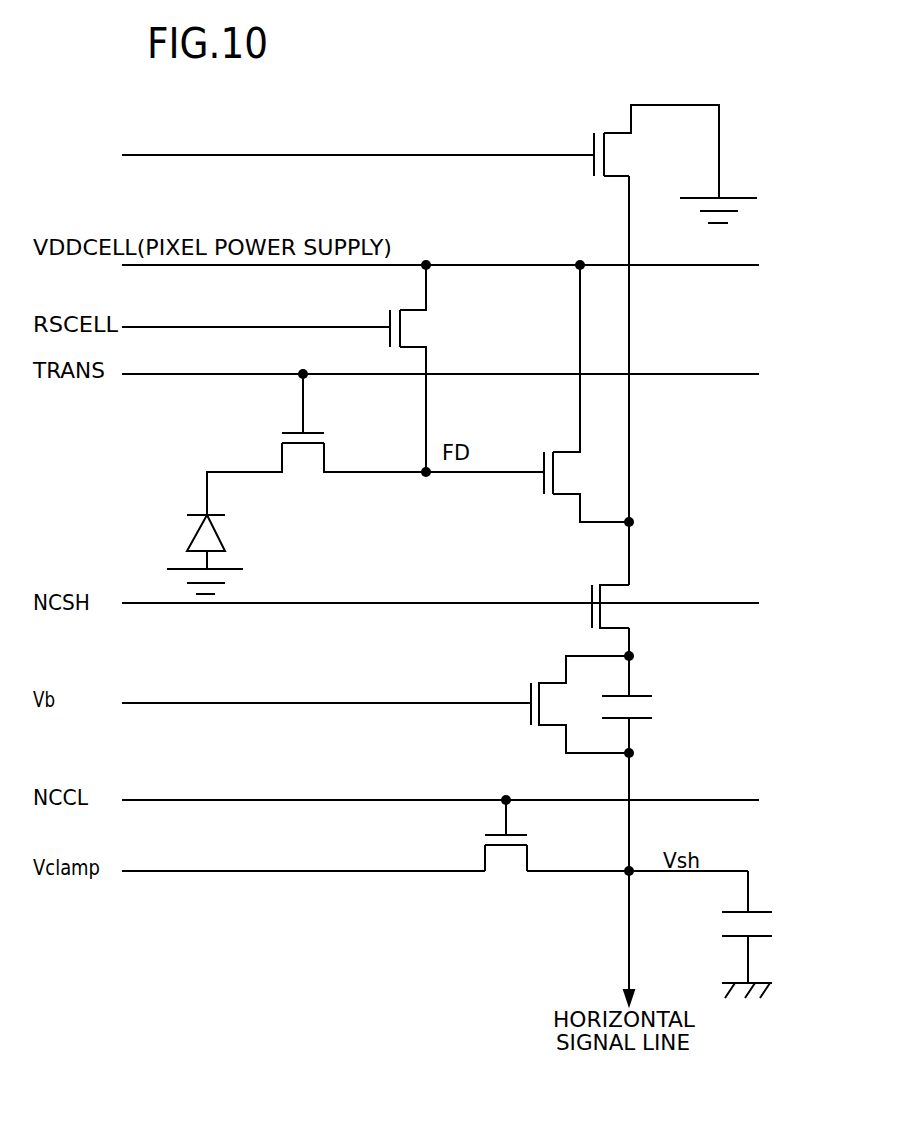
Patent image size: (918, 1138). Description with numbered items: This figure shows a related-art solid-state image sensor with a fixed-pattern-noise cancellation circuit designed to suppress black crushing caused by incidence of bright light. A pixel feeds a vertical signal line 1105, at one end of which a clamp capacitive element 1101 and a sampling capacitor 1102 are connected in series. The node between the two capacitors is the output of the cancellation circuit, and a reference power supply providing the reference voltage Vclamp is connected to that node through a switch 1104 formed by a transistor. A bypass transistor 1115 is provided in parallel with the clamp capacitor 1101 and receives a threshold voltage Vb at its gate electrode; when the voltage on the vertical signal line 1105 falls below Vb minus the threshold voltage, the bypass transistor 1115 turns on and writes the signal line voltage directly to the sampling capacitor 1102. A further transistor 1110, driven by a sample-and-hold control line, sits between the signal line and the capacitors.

The vertical signal line 1105 is at (629, 467).
The sample-and-hold transistor (NCSH) 1110 is at (627, 597).
The clamp capacitive element 1101 is at (647, 694).
The bypass transistor 1115 is at (530, 719).
The switch 1104 is at (503, 873).
The sampling capacitor 1102 is at (765, 912).